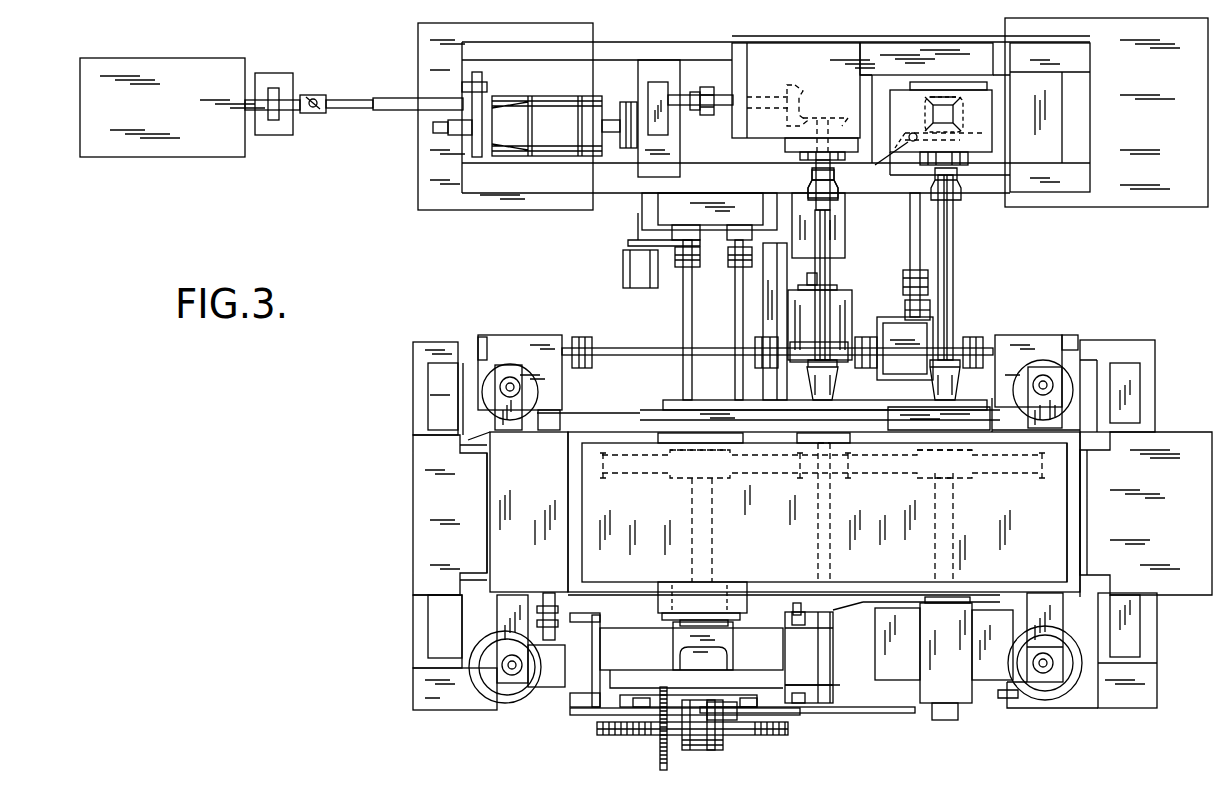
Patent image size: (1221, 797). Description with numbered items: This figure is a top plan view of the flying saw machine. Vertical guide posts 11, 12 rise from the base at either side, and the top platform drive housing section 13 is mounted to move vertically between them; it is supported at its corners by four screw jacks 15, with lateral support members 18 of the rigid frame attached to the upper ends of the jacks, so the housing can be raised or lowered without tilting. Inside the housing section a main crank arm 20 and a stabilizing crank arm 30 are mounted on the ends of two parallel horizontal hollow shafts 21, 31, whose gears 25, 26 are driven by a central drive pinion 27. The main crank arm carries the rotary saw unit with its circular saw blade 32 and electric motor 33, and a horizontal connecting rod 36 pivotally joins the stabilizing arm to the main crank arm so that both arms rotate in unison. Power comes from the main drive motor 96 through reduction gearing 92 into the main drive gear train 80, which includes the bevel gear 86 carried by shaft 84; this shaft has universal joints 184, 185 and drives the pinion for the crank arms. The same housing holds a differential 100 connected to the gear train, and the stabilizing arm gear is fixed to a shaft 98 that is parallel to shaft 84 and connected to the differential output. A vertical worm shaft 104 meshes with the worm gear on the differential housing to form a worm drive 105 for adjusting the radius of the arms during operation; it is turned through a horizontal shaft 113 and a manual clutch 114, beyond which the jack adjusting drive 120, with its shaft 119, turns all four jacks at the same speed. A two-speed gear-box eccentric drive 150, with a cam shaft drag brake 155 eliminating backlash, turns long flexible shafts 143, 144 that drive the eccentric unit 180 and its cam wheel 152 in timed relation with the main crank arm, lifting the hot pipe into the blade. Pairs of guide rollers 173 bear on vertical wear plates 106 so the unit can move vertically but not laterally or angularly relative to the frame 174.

The vertical guide post 11 is at (413, 494).
The vertical guide post 12 is at (1141, 536).
The top platform drive housing section 13 is at (487, 521).
The screw jack 15 is at (470, 358).
The lateral support member 18 is at (513, 425).
The main crank arm 20 is at (680, 638).
The hollow shaft 21 is at (712, 527).
The gear 25 is at (640, 478).
The gear 26 is at (1012, 478).
The central drive pinion 27 is at (838, 475).
The stabilizing crank arm 30 is at (930, 687).
The hollow shaft 31 is at (955, 530).
The circular saw blade 32 is at (658, 760).
The electric motor 33 is at (697, 745).
The horizontal connecting rod 36 is at (870, 713).
The main drive gear train 80 is at (790, 79).
The shaft 84 is at (822, 279).
The bevel gear 86 is at (828, 112).
The reduction gearing 92 is at (662, 96).
The main drive motor 96 is at (560, 115).
The shaft 98 is at (945, 238).
The differential 100 is at (999, 117).
The vertical worm shaft 104 is at (872, 161).
The worm drive 105 is at (985, 133).
The wear plate 106 is at (592, 707).
The horizontal shaft 113 is at (915, 223).
The manual clutch 114 is at (930, 291).
The shaft 119 is at (624, 350).
The jack adjusting drive 120 is at (913, 370).
The long flexible shaft 143 is at (738, 384).
The long flexible shaft 144 is at (688, 309).
The two-speed gear-box eccentric drive 150 is at (667, 212).
The cam wheel 152 is at (777, 735).
The cam shaft drag brake 155 is at (628, 271).
The guide roller 173 is at (795, 603).
The frame 174 is at (832, 685).
The eccentric unit 180 is at (828, 648).
The universal joint 184 is at (815, 176).
The universal joint 185 is at (828, 392).